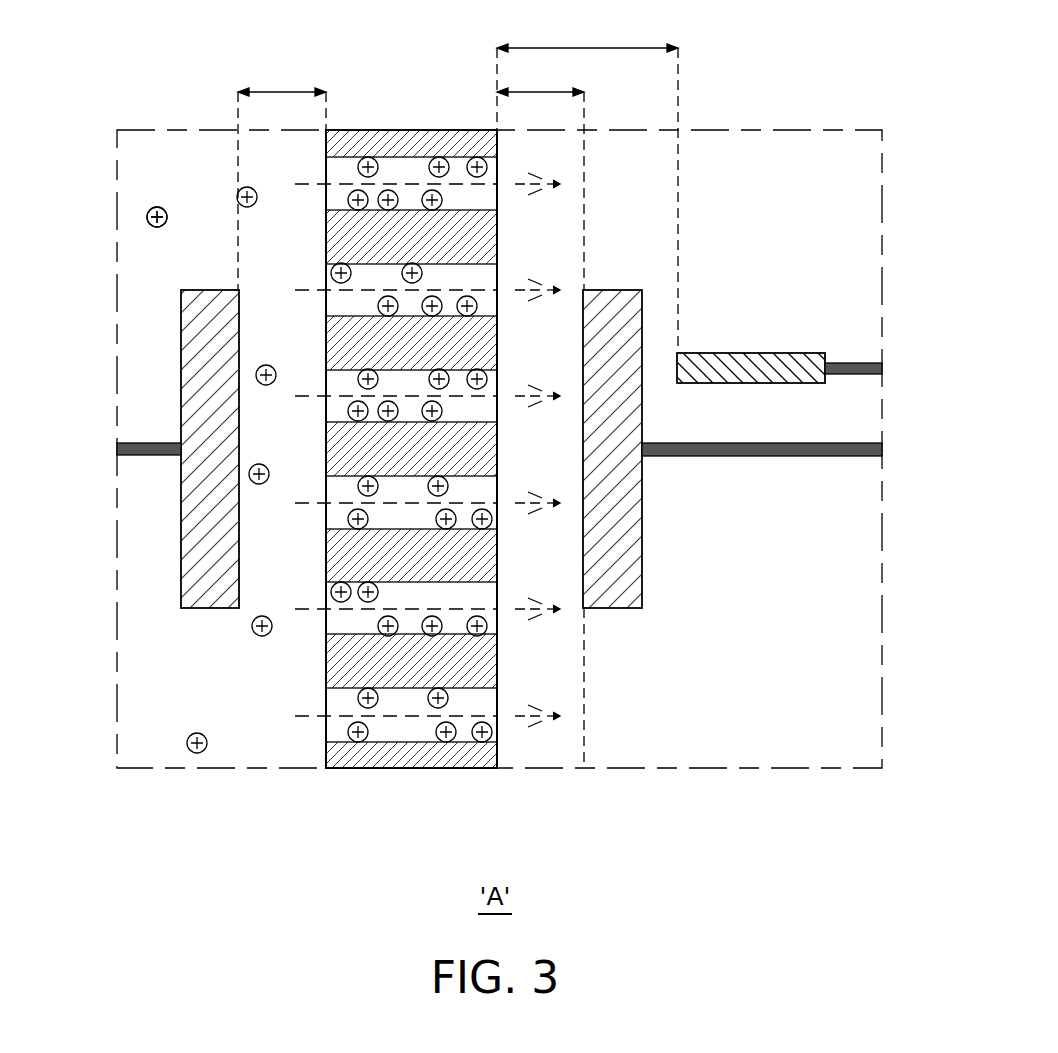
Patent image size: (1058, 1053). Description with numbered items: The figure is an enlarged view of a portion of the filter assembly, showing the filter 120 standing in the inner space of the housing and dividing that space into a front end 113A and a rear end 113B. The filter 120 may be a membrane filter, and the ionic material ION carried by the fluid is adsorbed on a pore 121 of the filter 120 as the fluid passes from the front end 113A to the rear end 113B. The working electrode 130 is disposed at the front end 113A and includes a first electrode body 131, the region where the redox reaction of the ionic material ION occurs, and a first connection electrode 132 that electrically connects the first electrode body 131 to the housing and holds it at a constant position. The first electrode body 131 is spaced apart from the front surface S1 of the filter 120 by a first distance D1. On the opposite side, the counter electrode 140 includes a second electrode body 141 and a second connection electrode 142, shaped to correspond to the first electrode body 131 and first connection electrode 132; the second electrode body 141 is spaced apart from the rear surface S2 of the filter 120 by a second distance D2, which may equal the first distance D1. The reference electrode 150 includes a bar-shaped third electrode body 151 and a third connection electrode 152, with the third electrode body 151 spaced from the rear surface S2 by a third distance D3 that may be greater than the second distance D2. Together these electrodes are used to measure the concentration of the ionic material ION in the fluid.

The filter 120 is at (418, 760).
The pore 121 is at (416, 168).
The working electrode 130 is at (177, 593).
The first electrode body 131 is at (215, 600).
The first connection electrode 132 is at (128, 455).
The counter electrode 140 is at (732, 593).
The second electrode body 141 is at (607, 600).
The second connection electrode 142 is at (690, 456).
The reference electrode 150 is at (779, 195).
The third electrode body 151 is at (778, 352).
The third connection electrode 152 is at (853, 363).
The front end of the inner space 113A is at (250, 747).
The rear end of the inner space 113B is at (571, 748).
The front surface of the filter S1 is at (326, 757).
The rear surface of the filter S2 is at (497, 757).
The first distance D1 is at (282, 176).
The second distance D2 is at (540, 408).
The third distance D3 is at (587, 186).
The ionic material ION is at (160, 207).